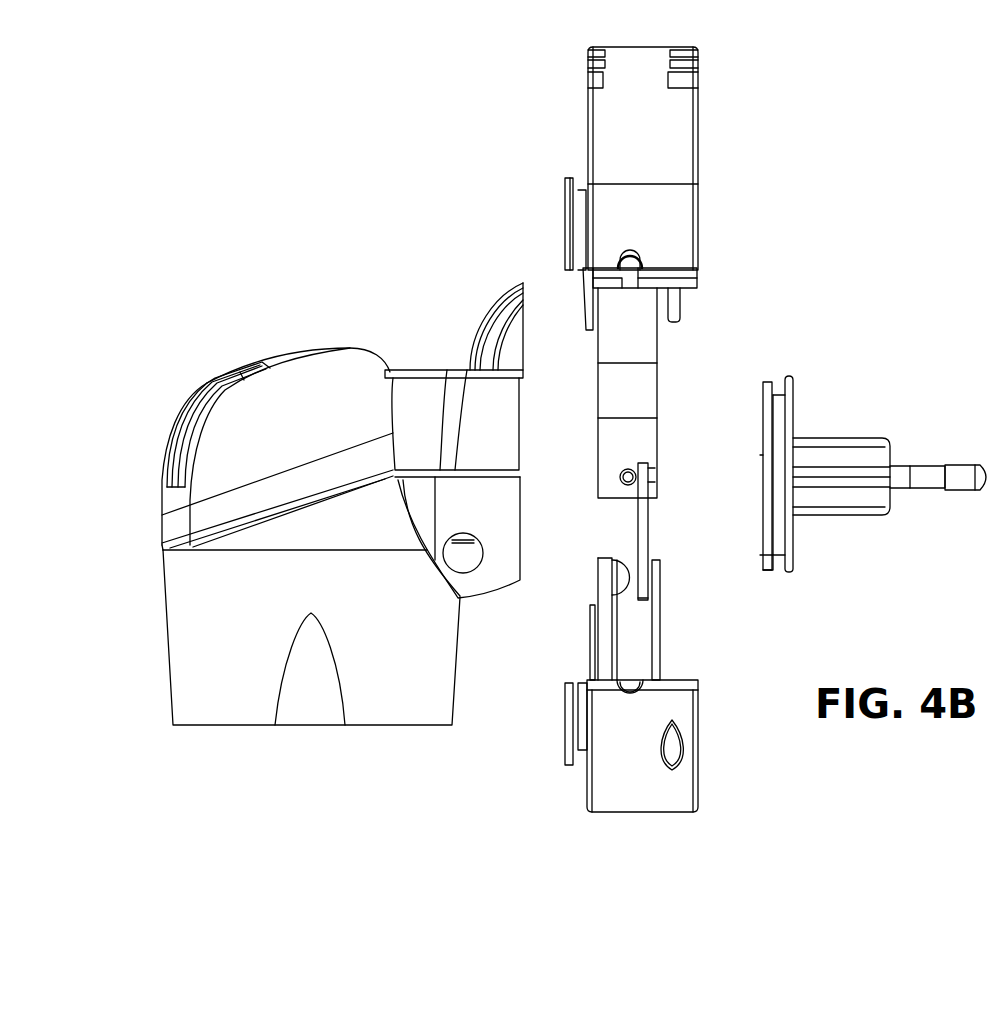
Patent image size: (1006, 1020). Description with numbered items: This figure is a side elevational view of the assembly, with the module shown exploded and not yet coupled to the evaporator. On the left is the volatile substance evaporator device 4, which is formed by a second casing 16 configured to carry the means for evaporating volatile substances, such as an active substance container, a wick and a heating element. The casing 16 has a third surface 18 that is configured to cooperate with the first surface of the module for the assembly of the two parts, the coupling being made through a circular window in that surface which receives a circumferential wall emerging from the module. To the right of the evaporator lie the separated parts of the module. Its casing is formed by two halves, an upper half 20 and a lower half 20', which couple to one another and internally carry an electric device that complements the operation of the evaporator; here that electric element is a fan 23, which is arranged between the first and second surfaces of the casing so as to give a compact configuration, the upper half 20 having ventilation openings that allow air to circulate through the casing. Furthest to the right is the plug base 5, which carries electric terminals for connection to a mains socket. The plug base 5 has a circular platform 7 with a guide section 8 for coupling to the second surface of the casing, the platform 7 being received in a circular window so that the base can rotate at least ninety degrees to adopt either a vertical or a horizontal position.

The volatile substance evaporator device 4 is at (203, 362).
The second casing 16 is at (228, 460).
The third surface 18 is at (523, 534).
The upper half 20 is at (584, 188).
The lower half 20' is at (686, 685).
The fan 23 is at (623, 395).
The guide section 8 is at (768, 378).
The circular platform 7 is at (790, 540).
The plug base 5 is at (830, 455).